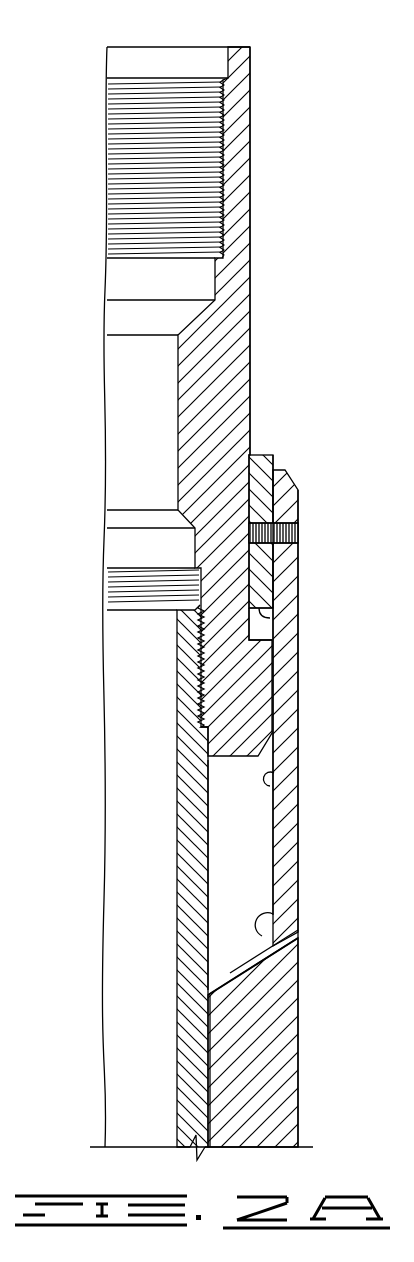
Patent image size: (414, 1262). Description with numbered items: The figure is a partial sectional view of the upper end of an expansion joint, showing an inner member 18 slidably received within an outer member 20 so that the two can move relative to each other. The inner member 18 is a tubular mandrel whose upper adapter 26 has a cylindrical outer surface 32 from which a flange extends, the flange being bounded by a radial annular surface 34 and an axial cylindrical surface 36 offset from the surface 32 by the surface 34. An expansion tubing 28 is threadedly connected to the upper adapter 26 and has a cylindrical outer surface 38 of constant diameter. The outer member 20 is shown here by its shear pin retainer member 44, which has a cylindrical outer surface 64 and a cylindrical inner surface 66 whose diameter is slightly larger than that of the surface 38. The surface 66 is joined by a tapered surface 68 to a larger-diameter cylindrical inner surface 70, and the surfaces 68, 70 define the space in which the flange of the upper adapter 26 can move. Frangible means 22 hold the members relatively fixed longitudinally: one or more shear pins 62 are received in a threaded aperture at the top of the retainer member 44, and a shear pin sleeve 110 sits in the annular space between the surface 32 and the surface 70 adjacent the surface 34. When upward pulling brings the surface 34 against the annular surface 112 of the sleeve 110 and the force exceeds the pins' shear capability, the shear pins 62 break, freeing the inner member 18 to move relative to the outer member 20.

The inner member 18 is at (250, 48).
The cylindrical outer surface 32 is at (250, 187).
The upper adapter 26 is at (230, 342).
The frangible means 22 is at (273, 455).
The outer member 20 is at (298, 490).
The shear pin 62 is at (298, 528).
The shear pin sleeve 110 is at (262, 575).
The annular surface 112 is at (270, 617).
The radial annular surface 34 is at (263, 637).
The axial cylindrical surface 36 is at (273, 683).
The cylindrical inner surface 70 is at (271, 786).
The shear pin retainer member 44 is at (290, 832).
The expansion tubing 28 is at (195, 905).
The tapered surface 68 is at (273, 915).
The cylindrical outer surface 38 is at (207, 954).
The cylindrical outer surface 64 is at (298, 1052).
The cylindrical inner surface 66 is at (208, 1070).